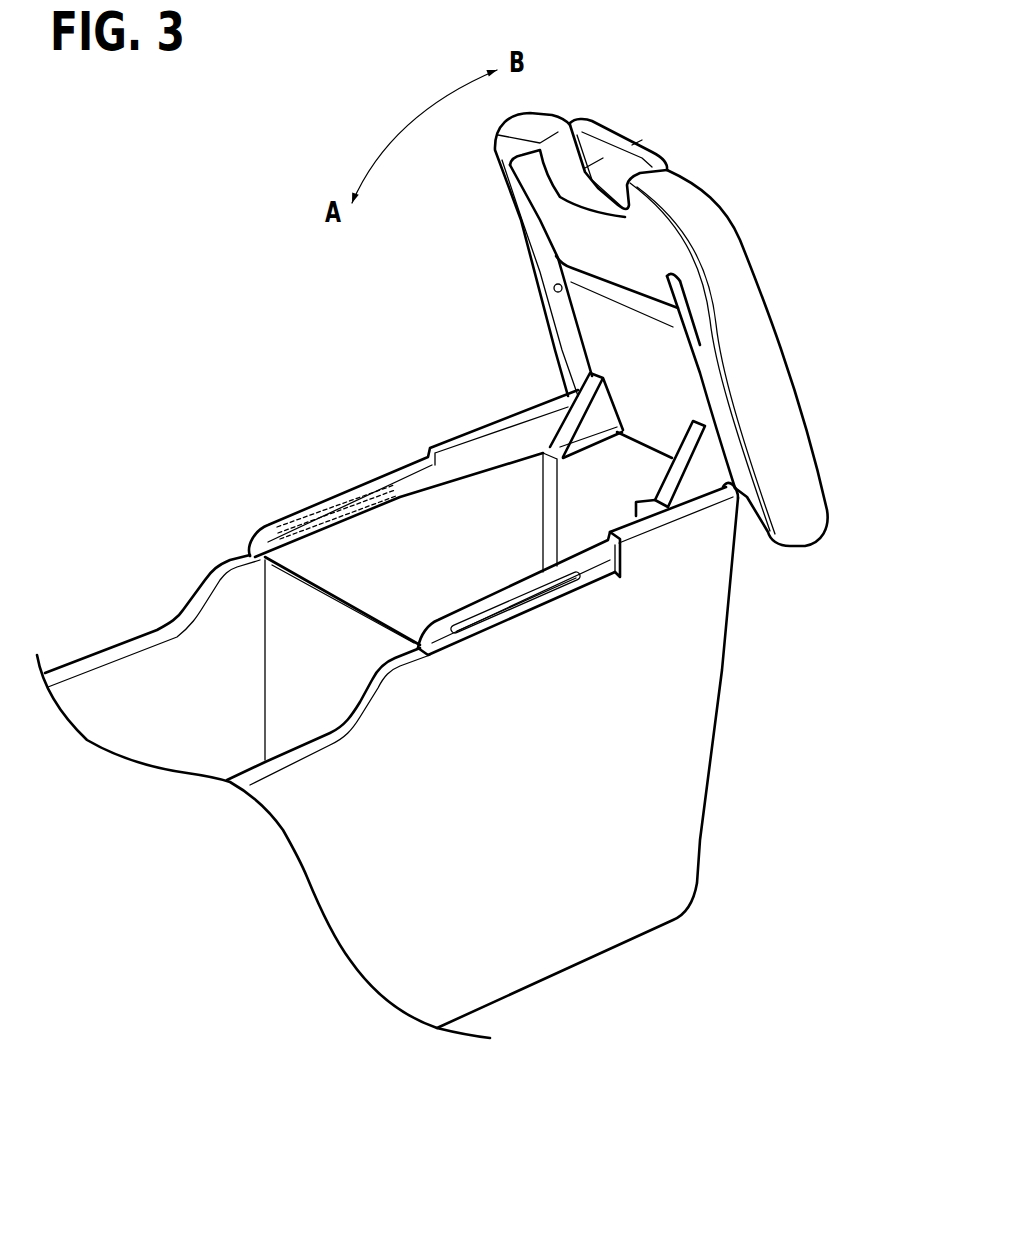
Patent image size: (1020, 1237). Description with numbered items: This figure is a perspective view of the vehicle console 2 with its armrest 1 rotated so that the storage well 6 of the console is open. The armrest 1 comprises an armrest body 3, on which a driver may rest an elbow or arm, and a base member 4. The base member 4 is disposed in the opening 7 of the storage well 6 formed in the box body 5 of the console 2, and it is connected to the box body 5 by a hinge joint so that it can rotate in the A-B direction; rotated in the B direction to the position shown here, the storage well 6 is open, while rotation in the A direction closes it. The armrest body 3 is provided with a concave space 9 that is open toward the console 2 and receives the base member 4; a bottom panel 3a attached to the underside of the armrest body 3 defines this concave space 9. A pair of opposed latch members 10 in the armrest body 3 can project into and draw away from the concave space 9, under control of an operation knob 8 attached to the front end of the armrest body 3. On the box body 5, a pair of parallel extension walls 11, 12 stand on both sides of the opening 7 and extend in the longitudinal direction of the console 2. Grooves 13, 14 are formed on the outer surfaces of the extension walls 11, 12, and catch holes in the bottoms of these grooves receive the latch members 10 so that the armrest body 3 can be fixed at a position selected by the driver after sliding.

The armrest 1 is at (698, 187).
The vehicle console 2 is at (732, 700).
The armrest body 3 is at (730, 268).
The bottom panel 3a is at (623, 273).
The base member 4 is at (649, 352).
The box body 5 is at (473, 740).
The storage well 6 is at (413, 592).
The opening 7 is at (493, 517).
The operation knob 8 is at (632, 148).
The concave space 9 is at (540, 213).
The latch members 10 is at (554, 292).
The extension wall 11 is at (593, 570).
The extension wall 12 is at (268, 540).
The groove 13 is at (510, 608).
The groove 14 is at (323, 500).